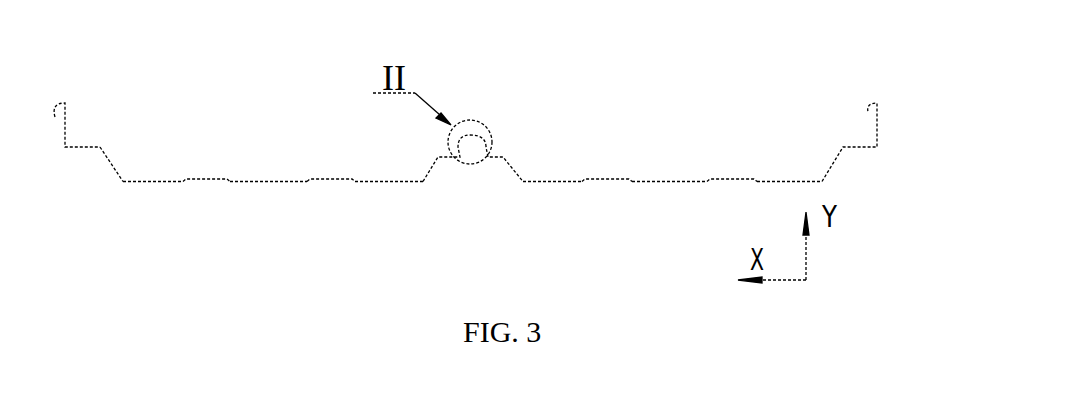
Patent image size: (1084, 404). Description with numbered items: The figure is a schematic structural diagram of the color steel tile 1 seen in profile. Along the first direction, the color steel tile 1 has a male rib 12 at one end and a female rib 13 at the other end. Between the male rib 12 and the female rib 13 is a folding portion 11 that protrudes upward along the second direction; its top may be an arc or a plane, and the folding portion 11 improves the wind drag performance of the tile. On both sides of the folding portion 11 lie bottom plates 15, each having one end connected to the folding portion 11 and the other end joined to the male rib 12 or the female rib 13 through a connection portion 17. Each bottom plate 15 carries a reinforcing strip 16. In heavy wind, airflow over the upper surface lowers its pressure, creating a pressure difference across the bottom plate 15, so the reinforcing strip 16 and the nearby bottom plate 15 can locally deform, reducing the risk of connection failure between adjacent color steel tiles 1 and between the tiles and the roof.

The color steel tile 1 is at (483, 33).
The folding portion 11 is at (488, 132).
The male rib 12 is at (880, 122).
The female rib 13 is at (67, 122).
The bottom plate 15 is at (152, 182).
The reinforcing strip 16 is at (207, 178).
The connection portion 17 is at (112, 165).